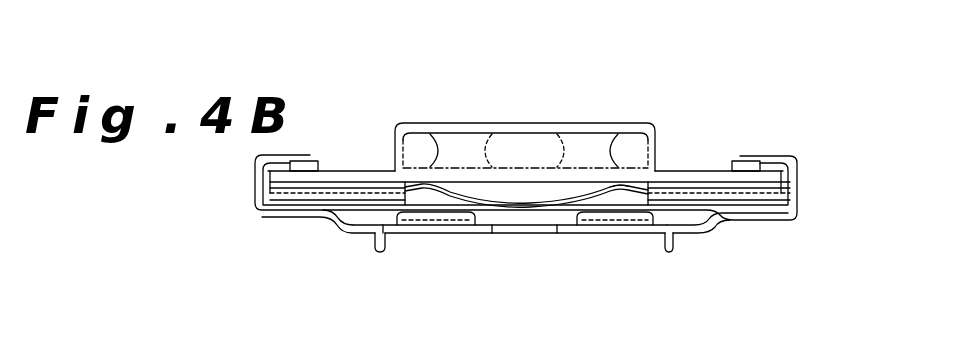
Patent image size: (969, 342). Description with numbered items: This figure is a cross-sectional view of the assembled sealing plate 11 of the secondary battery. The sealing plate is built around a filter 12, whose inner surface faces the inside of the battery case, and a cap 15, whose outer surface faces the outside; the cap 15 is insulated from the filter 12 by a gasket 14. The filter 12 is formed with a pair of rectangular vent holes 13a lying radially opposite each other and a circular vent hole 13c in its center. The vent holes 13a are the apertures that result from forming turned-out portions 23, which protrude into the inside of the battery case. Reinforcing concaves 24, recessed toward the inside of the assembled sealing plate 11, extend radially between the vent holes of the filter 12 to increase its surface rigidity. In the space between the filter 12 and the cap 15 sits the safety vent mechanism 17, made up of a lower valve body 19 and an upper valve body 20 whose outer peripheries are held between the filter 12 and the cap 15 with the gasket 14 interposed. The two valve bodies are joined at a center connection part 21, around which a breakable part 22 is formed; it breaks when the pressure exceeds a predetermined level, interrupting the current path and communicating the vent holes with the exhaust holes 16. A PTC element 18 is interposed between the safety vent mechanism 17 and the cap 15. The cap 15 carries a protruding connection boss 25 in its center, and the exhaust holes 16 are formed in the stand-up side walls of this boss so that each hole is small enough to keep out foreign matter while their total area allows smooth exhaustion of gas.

The assembled sealing plate 11 is at (226, 193).
The filter 12 is at (287, 213).
The vent holes 13a is at (386, 230).
The vent hole 13c is at (550, 235).
The gasket 14 is at (287, 196).
The cap 15 is at (358, 177).
The exhaust holes 16 is at (498, 152).
The safety vent mechanism 17 is at (623, 57).
The PTC element 18 is at (693, 173).
The lower valve body 19 is at (590, 203).
The upper valve body 20 is at (571, 207).
The center connection part 21 is at (530, 201).
The breakable part 22 is at (632, 190).
The turned-out portions 23 is at (679, 247).
The reinforcing concaves 24 is at (618, 222).
The connection boss 25 is at (432, 136).